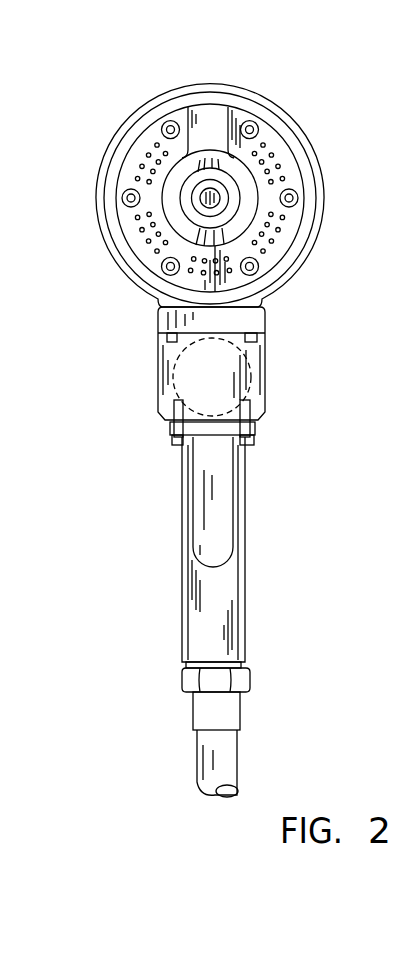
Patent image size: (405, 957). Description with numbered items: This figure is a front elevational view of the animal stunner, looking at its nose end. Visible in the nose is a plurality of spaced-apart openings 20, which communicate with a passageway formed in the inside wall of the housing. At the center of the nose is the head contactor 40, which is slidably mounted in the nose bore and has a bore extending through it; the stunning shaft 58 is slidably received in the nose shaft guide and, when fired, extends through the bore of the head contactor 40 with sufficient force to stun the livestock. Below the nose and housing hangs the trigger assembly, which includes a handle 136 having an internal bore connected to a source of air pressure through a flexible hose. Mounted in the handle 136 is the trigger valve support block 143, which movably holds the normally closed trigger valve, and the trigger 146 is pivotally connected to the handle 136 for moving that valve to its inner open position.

The openings 20 is at (268, 156).
The head contactor 40 is at (207, 185).
The stunning shaft 58 is at (220, 192).
The handle 136 is at (223, 593).
The trigger valve support block 143 is at (253, 360).
The trigger 146 is at (217, 535).